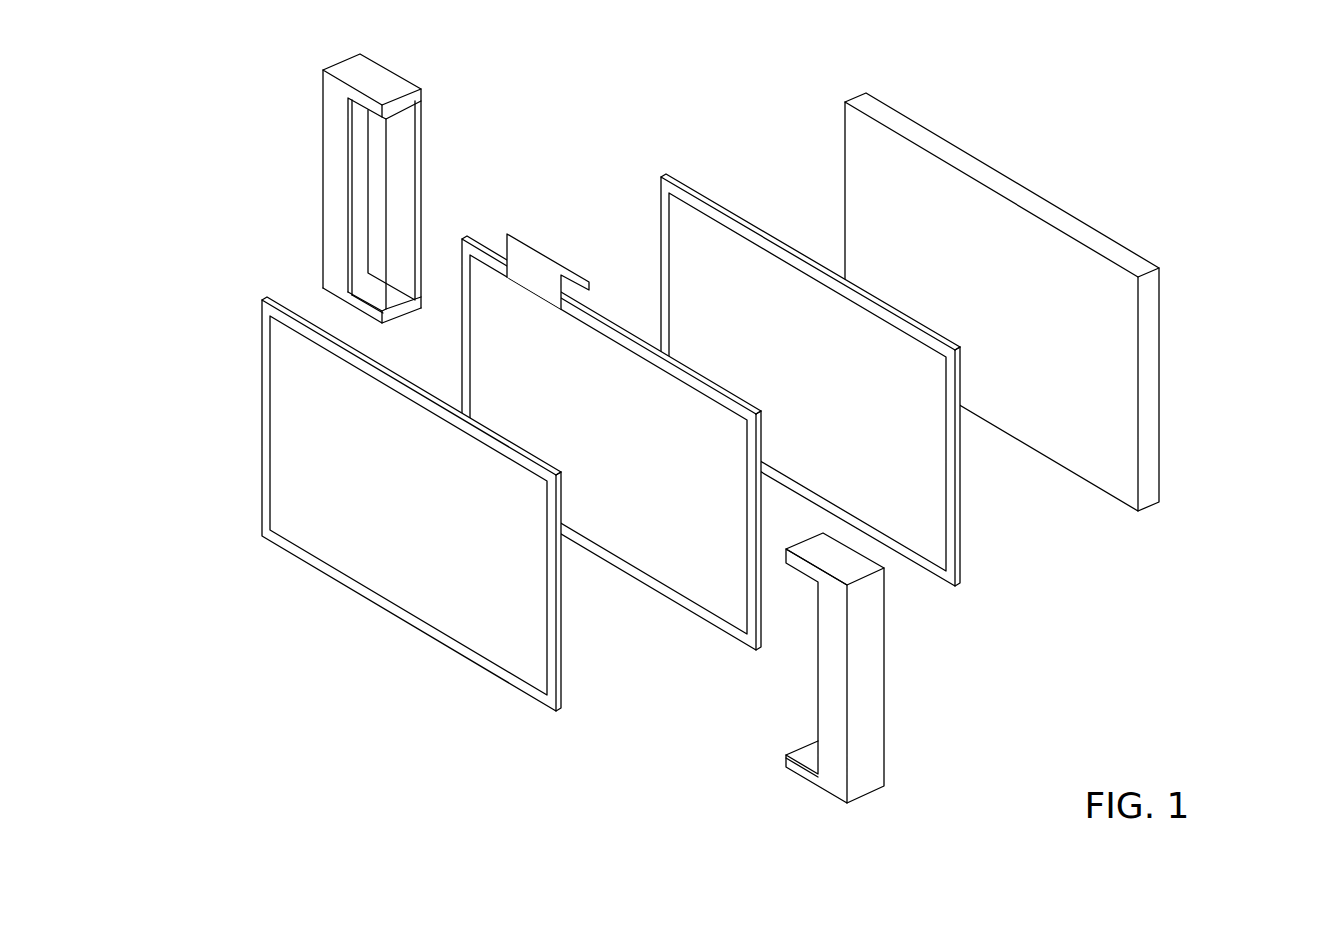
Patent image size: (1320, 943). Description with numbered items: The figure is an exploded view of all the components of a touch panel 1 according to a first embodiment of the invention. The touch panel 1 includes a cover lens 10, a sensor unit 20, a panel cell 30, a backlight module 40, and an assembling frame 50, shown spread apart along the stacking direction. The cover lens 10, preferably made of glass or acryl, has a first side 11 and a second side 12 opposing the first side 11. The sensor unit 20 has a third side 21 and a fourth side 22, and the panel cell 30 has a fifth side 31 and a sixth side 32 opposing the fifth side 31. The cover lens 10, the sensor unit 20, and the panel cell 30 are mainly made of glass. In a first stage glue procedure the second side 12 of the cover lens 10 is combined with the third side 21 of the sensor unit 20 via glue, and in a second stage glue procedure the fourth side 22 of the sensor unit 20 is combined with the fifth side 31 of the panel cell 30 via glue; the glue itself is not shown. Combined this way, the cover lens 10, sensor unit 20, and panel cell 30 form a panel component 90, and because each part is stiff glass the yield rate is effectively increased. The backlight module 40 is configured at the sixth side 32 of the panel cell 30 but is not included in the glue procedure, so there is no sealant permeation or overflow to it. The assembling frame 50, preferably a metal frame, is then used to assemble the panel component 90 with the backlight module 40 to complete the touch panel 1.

The touch panel 1 is at (743, 421).
The panel component 90 is at (614, 419).
The cover lens 10 is at (414, 445).
The first side 11 is at (293, 442).
The second side 12 is at (562, 664).
The sensor unit 20 is at (633, 430).
The third side 21 is at (657, 532).
The fourth side 22 is at (762, 602).
The panel cell 30 is at (796, 382).
The fifth side 31 is at (778, 292).
The sixth side 32 is at (960, 539).
The backlight module 40 is at (1143, 237).
The assembling frame 50 is at (328, 177).